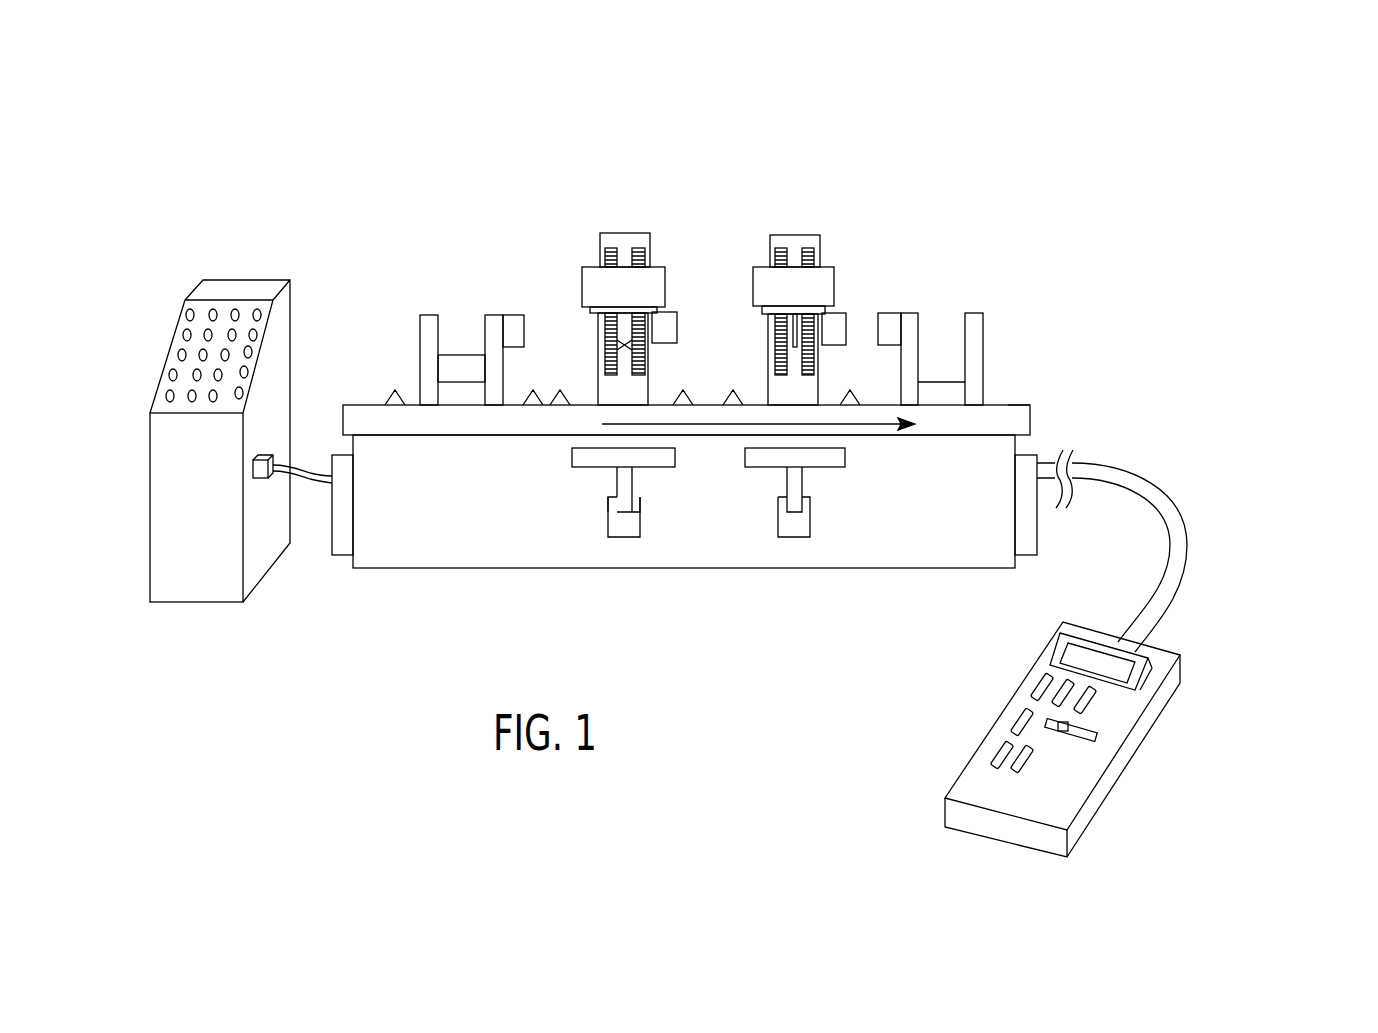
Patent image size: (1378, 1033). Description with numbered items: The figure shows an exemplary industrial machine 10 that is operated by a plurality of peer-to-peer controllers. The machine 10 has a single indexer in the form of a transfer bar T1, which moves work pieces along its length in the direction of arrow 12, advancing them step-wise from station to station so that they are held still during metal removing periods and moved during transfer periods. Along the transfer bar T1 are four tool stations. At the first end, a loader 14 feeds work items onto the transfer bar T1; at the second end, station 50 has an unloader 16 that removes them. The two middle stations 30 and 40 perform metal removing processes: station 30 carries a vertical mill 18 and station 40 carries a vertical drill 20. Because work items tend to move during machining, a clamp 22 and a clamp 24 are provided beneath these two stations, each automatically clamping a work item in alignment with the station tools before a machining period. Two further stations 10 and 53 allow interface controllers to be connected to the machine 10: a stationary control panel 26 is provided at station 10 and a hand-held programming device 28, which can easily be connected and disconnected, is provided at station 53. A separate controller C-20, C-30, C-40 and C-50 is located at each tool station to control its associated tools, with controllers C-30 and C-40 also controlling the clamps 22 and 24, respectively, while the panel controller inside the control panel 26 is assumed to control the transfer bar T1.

The machine 10 is at (317, 168).
The station 30 is at (702, 167).
The station 40 is at (870, 165).
The station 50 is at (1020, 233).
The station 53 is at (1217, 167).
The arrow 12 is at (880, 424).
The loader 14 is at (420, 333).
The unloader 16 is at (983, 328).
The vertical mill 18 is at (665, 283).
The vertical drill 20 is at (752, 285).
The clamp 22 is at (617, 485).
The clamp 24 is at (790, 485).
The stationary control panel 26 is at (220, 595).
The hand-held programming device 28 is at (1120, 746).
The transfer bar T1 is at (1008, 405).
The controller C-20 is at (513, 322).
The controller C-30 is at (663, 345).
The controller C-40 is at (832, 345).
The controller C-50 is at (882, 312).